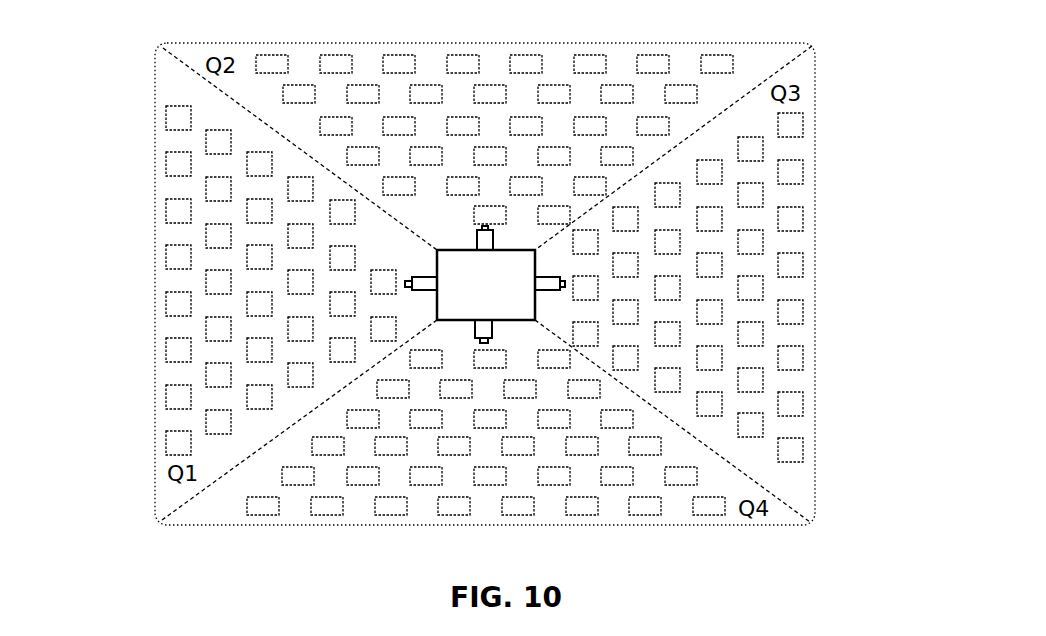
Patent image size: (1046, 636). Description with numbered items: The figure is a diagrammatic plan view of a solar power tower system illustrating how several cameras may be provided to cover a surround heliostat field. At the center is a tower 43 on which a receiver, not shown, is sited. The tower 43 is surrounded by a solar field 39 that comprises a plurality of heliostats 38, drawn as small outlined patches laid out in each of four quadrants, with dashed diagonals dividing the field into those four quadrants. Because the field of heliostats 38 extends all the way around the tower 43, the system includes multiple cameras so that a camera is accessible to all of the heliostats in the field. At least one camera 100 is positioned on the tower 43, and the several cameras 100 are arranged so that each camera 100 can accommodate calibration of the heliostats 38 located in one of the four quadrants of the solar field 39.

The heliostat 38 is at (318, 512).
The solar field 39 is at (487, 522).
The tower 43 is at (486, 285).
The camera 100 is at (469, 275).